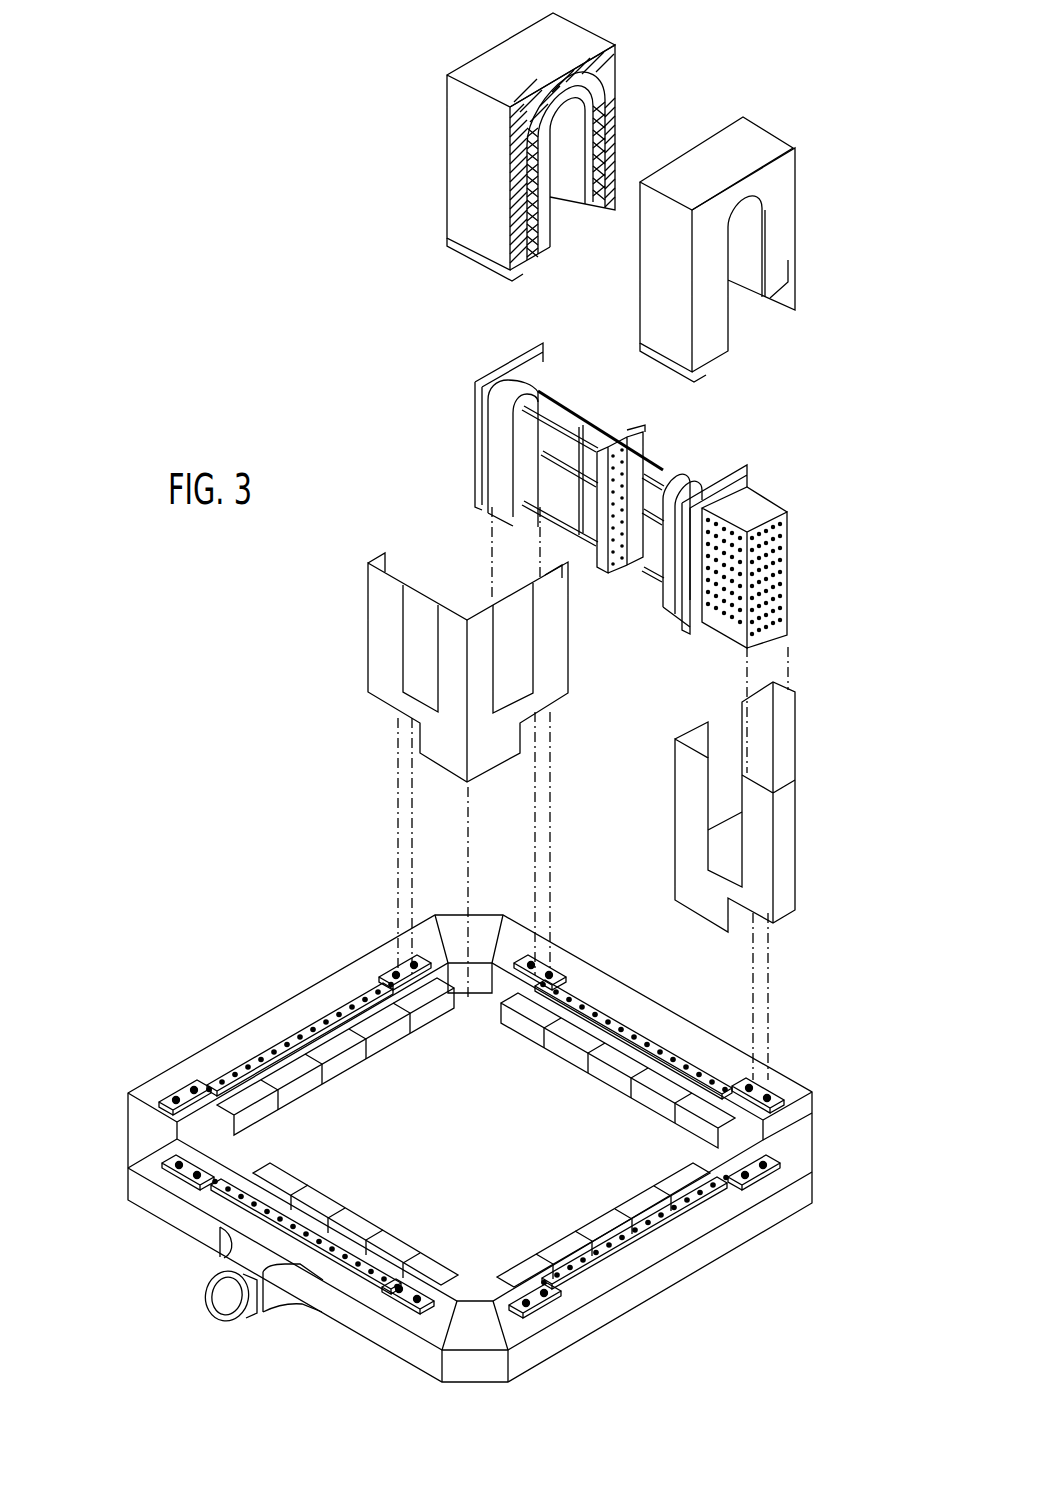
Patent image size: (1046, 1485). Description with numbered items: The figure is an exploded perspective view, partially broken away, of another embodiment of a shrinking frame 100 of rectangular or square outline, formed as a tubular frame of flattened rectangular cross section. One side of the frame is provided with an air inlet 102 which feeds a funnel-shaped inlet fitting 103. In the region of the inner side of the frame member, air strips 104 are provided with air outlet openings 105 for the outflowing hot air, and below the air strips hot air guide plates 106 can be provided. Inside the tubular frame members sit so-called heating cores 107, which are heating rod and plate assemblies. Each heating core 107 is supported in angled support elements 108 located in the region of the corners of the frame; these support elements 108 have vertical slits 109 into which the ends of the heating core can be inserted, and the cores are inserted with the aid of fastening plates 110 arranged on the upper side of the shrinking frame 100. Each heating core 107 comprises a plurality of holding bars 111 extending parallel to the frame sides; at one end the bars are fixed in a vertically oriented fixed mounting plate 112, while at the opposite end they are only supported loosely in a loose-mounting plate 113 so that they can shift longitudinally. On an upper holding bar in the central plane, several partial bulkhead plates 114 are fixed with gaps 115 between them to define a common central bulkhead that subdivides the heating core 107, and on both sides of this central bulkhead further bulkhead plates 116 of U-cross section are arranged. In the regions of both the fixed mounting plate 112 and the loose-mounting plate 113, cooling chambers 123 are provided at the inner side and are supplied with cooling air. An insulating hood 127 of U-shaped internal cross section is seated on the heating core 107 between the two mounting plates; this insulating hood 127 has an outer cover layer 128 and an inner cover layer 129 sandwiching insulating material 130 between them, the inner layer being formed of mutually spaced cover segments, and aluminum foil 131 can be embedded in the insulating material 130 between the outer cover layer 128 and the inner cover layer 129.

The shrinking frame 100 is at (266, 890).
The air inlet 102 is at (230, 1302).
The funnel-shaped inlet fitting 103 is at (283, 1292).
The air strips 104 is at (257, 1105).
The air outlet openings 105 is at (333, 1013).
The hot air guide plates 106 is at (242, 1057).
The heating core 107 is at (757, 447).
The angled support elements 108 is at (368, 657).
The vertical slits 109 is at (513, 604).
The fastening plates 110 is at (155, 1153).
The holding bars 111 is at (645, 473).
The fixed mounting plate 112 is at (752, 481).
The loose-mounting plate 113 is at (478, 393).
The partial bulkhead plates 114 is at (542, 427).
The gaps 115 is at (594, 450).
The bulkhead plates 116 is at (603, 493).
The cooling chambers 123 is at (517, 390).
The insulating hood 127 is at (760, 90).
The outer cover layer 128 is at (572, 55).
The inner cover layer 129 is at (598, 112).
The insulating material 130 is at (600, 78).
The aluminum foil 131 is at (569, 128).